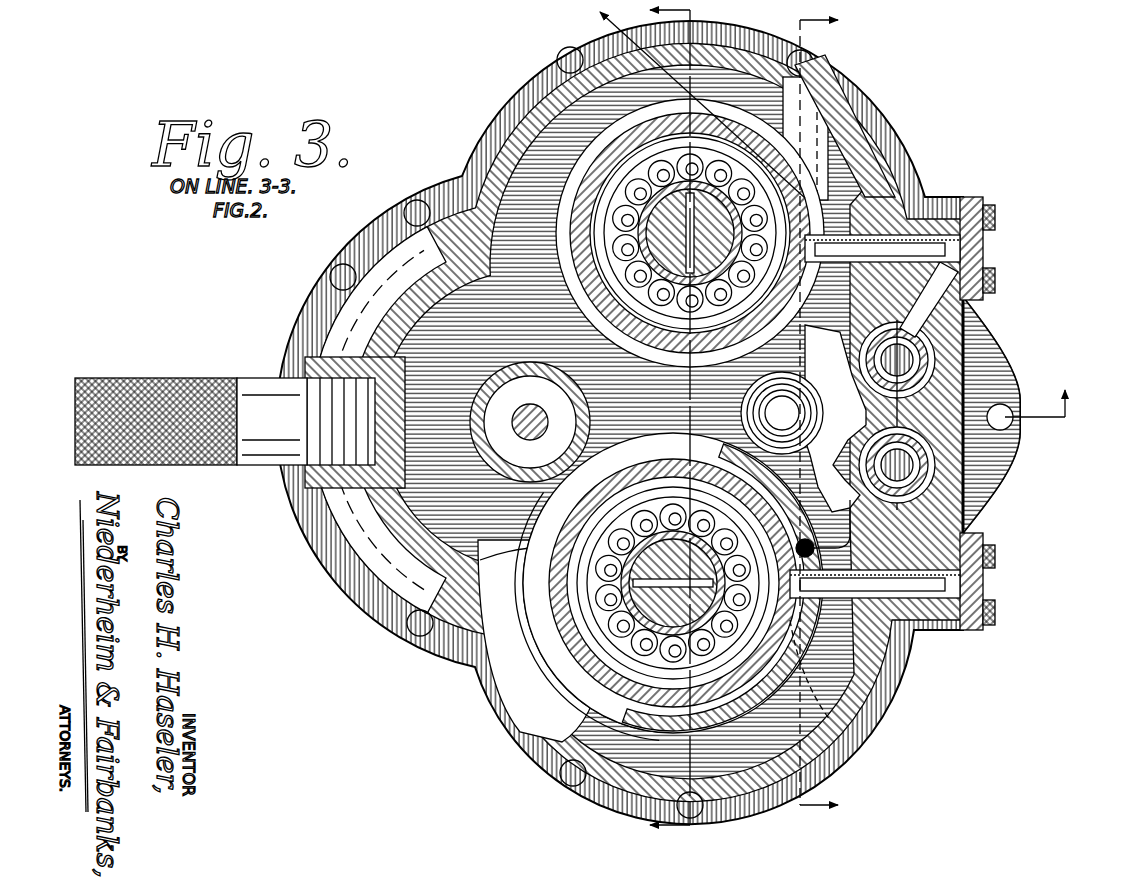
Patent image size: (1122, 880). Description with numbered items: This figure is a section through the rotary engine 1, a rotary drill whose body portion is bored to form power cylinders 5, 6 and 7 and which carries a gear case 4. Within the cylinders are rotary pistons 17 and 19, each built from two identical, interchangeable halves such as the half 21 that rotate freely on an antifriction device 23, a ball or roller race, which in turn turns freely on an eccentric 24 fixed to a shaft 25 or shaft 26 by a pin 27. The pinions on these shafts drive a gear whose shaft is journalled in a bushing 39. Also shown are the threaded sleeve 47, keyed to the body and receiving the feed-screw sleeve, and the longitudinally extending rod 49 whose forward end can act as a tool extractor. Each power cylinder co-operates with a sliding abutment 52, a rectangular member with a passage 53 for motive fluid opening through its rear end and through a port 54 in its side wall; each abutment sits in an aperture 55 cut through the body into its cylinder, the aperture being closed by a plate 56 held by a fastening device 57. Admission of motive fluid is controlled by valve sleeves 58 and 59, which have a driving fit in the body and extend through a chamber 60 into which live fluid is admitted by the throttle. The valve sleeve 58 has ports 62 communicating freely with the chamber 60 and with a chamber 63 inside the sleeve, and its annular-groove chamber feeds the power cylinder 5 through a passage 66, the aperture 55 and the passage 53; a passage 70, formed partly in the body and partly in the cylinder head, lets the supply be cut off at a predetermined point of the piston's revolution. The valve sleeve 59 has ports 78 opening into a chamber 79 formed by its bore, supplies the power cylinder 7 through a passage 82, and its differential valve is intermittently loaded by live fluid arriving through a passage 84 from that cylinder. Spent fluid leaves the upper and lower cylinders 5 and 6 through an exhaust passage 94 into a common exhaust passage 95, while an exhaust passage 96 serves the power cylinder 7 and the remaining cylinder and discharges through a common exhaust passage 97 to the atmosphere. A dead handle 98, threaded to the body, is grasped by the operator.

The rotary engine 1 is at (478, 98).
The gear case 4 is at (645, 418).
The power cylinder 5 is at (830, 411).
The power cylinder 6 is at (813, 226).
The power cylinder 7 is at (556, 548).
The rotary piston 17 is at (730, 118).
The rotary piston 19 is at (650, 694).
The piston half 21 is at (630, 135).
The antifriction device 23 is at (612, 168).
The eccentric 24 is at (600, 300).
The shaft 25 is at (640, 338).
The shaft 26 is at (740, 645).
The pin 27 is at (662, 226).
The bushing 39 is at (782, 413).
The threaded sleeve 47 is at (470, 424).
The rod 49 is at (524, 408).
The sliding abutment 52 is at (905, 240).
The passage 53 is at (930, 232).
The port 54 is at (885, 255).
The aperture 55 is at (975, 206).
The plate 56 is at (986, 250).
The fastening device 57 is at (996, 215).
The valve sleeve 58 is at (1000, 380).
The valve sleeve 59 is at (930, 460).
The chamber 60 is at (689, 414).
The port 62 is at (925, 365).
The chamber 63 is at (915, 355).
The passage 66 is at (940, 305).
The passage 70 is at (893, 285).
The port 78 is at (935, 475).
The chamber 79 is at (920, 485).
The passage 82 is at (982, 547).
The passage 84 is at (975, 598).
The exhaust passage 94 is at (850, 232).
The common exhaust passage 95 is at (812, 195).
The exhaust passage 96 is at (815, 548).
The common exhaust passage 97 is at (868, 726).
The dead handle 98 is at (190, 380).